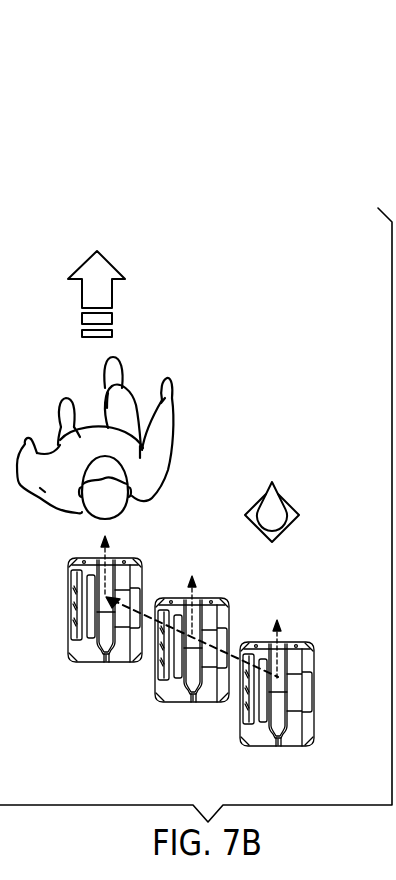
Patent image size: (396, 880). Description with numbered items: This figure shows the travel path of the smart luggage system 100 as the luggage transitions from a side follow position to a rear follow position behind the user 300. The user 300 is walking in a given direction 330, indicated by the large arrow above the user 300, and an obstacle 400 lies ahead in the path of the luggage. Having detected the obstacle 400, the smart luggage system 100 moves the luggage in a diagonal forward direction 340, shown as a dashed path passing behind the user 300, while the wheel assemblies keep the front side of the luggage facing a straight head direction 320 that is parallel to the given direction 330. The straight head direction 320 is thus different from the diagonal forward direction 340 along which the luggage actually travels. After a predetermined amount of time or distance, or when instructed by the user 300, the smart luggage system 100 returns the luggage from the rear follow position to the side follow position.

The smart luggage system 100 is at (192, 708).
The user 300 is at (40, 496).
The head direction 320 is at (105, 572).
The given direction 330 is at (82, 264).
The diagonal forward direction 340 is at (150, 618).
The obstacle 400 is at (282, 492).